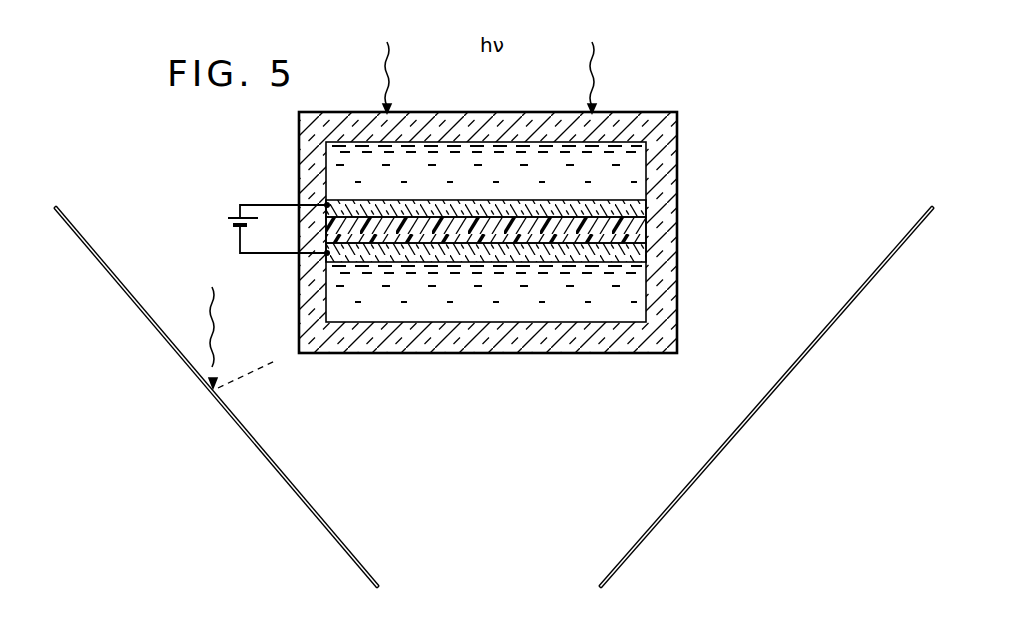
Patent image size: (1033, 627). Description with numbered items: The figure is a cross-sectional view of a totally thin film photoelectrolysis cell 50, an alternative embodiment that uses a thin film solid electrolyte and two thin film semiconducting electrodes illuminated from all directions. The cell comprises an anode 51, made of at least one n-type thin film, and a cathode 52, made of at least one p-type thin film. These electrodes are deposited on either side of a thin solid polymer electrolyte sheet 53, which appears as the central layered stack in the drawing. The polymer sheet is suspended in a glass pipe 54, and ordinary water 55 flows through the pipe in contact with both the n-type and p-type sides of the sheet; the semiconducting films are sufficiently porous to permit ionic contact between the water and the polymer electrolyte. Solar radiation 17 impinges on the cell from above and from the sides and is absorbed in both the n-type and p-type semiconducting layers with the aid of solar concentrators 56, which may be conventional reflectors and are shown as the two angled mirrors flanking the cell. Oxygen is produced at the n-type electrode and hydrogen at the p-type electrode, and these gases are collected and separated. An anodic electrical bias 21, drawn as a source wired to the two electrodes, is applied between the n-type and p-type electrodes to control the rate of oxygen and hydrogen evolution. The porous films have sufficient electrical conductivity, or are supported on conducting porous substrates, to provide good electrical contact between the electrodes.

The solar radiation 17 is at (388, 78).
The anodic electrical bias 21 is at (232, 220).
The thin film photoelectrolysis cell 50 is at (678, 153).
The anode 51 is at (636, 211).
The cathode 52 is at (640, 258).
The solid polymer electrolyte sheet 53 is at (646, 238).
The glass pipe 54 is at (670, 303).
The water 55 is at (519, 157).
The solar concentrators 56 is at (250, 443).